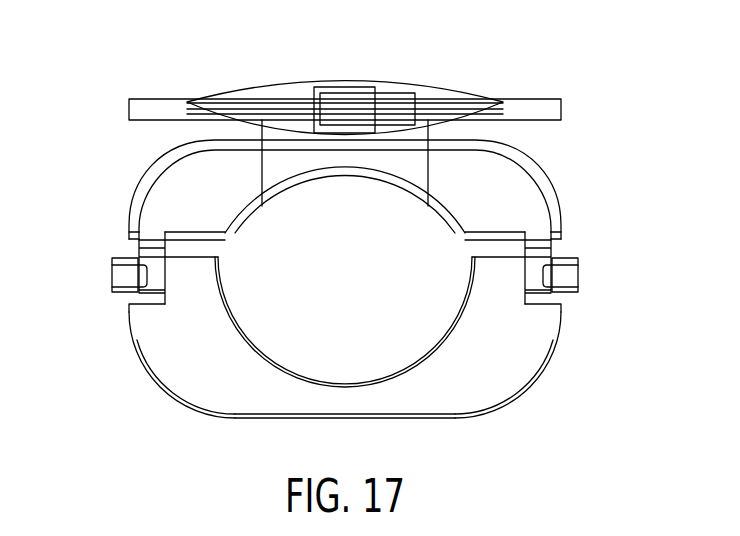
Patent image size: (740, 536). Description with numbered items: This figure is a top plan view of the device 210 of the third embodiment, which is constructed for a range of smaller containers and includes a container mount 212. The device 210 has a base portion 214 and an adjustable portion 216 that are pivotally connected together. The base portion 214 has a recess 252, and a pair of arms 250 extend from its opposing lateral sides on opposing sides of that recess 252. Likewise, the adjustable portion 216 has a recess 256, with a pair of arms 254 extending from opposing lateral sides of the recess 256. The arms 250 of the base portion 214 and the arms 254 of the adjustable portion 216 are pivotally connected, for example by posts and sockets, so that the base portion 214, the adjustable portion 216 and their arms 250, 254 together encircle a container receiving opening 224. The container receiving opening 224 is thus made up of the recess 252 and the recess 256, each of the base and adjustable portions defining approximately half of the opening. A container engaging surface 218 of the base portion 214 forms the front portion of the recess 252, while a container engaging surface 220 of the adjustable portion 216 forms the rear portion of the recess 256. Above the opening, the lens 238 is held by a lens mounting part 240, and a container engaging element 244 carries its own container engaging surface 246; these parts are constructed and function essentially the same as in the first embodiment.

The device 210 is at (603, 135).
The container mount 212 is at (573, 395).
The base portion 214 is at (150, 193).
The adjustable portion 216 is at (270, 407).
The container engaging surface 218 is at (358, 178).
The container engaging surface 220 is at (343, 383).
The container receiving opening 224 is at (417, 343).
The lens 238 is at (289, 83).
The lens mounting part 240 is at (362, 96).
The container engaging element 244 is at (400, 197).
The container engaging surface 246 is at (303, 192).
The arms 250 is at (150, 227).
The recess 252 is at (247, 240).
The arms 254 is at (155, 332).
The recess 256 is at (278, 323).